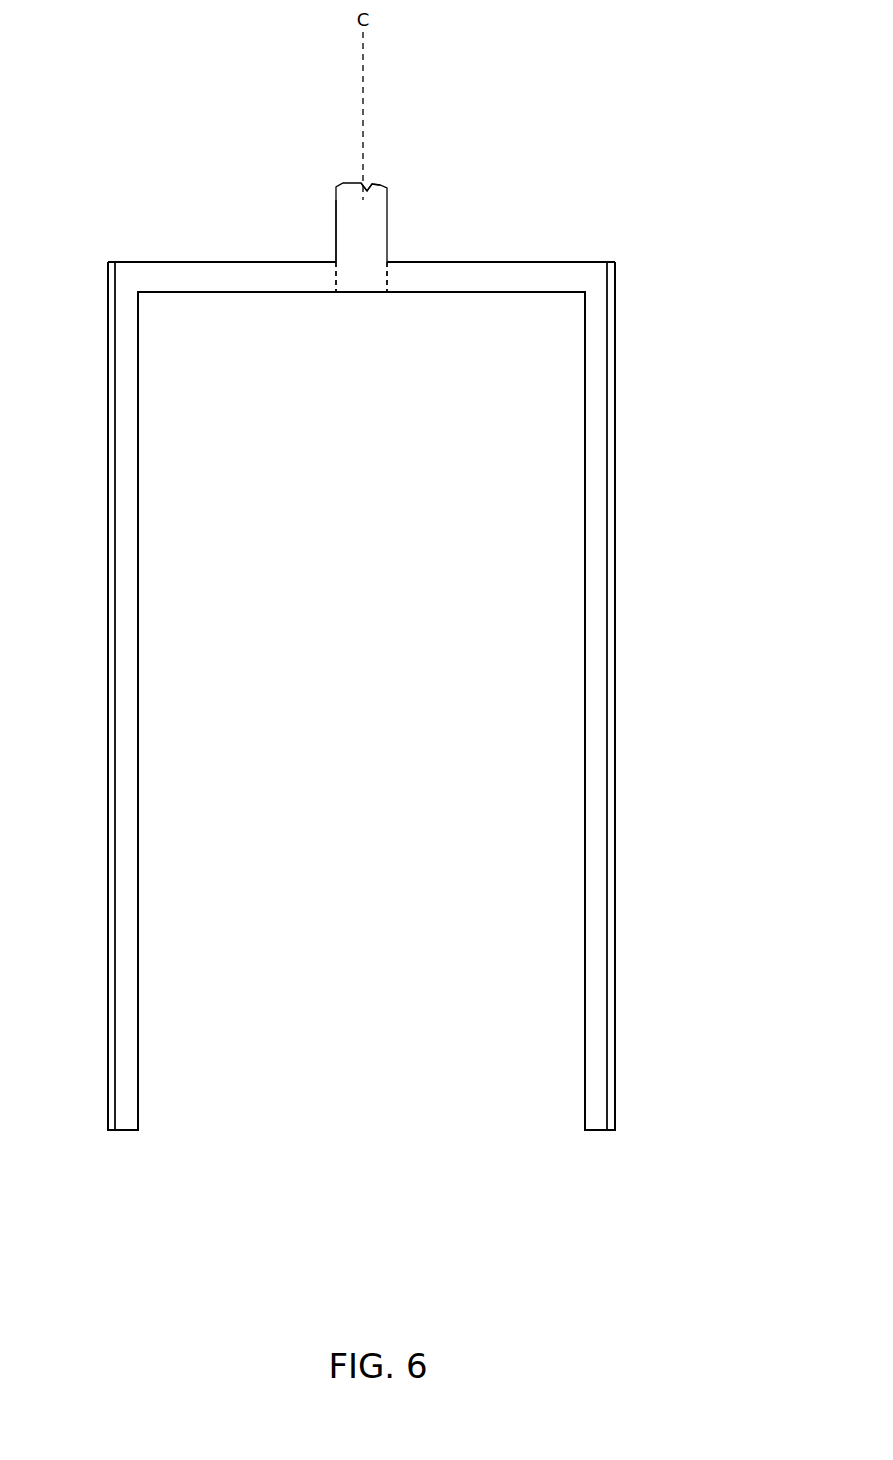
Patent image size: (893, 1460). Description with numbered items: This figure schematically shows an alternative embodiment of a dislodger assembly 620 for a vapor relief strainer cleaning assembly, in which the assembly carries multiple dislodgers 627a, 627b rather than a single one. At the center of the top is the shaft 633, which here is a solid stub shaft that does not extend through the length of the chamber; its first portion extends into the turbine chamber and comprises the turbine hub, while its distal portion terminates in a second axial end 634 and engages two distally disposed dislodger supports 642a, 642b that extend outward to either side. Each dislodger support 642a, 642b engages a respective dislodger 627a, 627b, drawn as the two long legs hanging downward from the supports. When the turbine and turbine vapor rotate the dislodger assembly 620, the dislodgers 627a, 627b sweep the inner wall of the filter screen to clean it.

The dislodger assembly 620 is at (712, 270).
The dislodger support 642b is at (275, 270).
The dislodger support 642a is at (500, 268).
The dislodger 627b is at (113, 497).
The dislodger 627a is at (612, 655).
The stub shaft 633 is at (368, 232).
The second axial end 634 is at (360, 293).